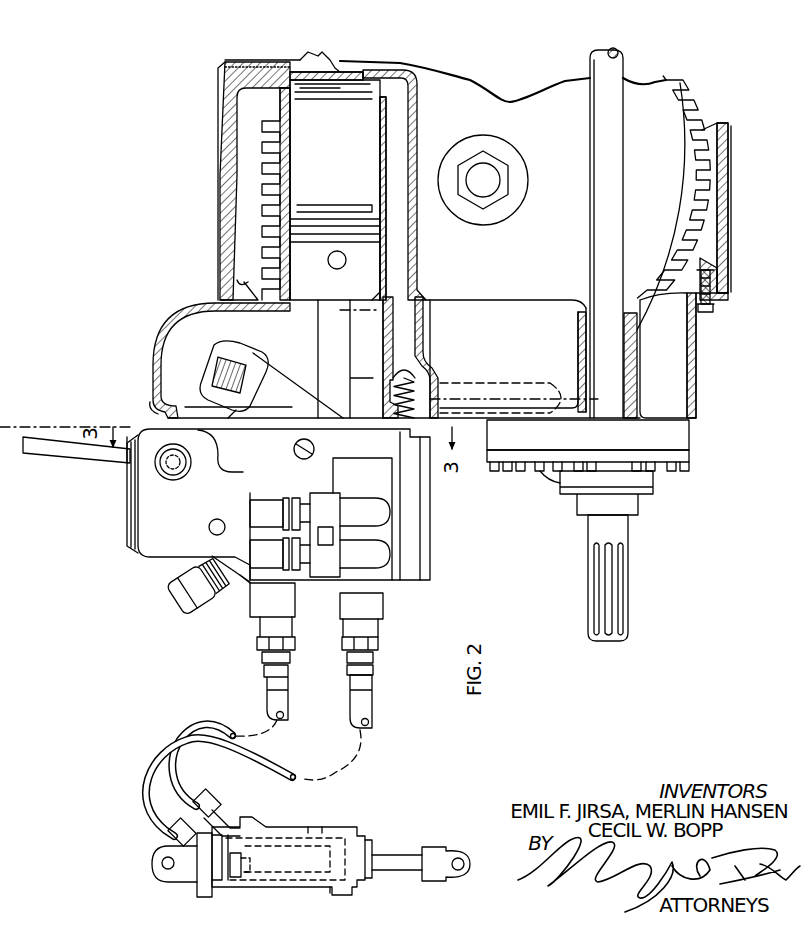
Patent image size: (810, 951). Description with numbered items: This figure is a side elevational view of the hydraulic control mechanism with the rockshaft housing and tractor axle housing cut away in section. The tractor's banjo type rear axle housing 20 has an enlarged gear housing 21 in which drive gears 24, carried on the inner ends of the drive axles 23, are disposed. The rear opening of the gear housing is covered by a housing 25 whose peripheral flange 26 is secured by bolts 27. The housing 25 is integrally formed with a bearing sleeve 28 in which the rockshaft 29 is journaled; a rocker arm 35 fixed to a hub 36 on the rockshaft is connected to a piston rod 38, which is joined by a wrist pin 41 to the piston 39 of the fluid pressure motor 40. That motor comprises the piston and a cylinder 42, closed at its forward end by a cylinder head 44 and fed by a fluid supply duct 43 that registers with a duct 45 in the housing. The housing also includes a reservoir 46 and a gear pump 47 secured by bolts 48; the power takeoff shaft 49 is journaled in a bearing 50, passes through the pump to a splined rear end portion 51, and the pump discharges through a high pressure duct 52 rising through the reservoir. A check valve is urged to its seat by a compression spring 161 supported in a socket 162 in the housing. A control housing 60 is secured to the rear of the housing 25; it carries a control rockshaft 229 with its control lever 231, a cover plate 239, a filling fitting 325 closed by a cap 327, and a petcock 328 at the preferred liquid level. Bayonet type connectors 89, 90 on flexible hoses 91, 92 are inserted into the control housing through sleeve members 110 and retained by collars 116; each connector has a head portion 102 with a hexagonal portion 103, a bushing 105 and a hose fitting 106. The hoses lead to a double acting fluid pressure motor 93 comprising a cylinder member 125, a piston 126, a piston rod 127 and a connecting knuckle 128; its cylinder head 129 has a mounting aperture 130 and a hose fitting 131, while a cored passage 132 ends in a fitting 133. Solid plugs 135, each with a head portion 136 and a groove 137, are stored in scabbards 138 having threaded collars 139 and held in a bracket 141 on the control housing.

The rear axle housing 20 is at (218, 108).
The gear housing 21 is at (219, 240).
The drive axle 23 is at (478, 192).
The drive gear 24 is at (258, 288).
The housing 25 is at (698, 382).
The flange 26 is at (729, 297).
The bolt 27 is at (711, 316).
The bearing sleeve 28 is at (159, 343).
The rockshaft 29 is at (213, 370).
The rocker arm 35 is at (289, 389).
The hub 36 is at (251, 354).
The piston rod 38 is at (340, 374).
The piston 39 is at (365, 259).
The fluid pressure motor 40 is at (340, 66).
The wrist pin 41 is at (328, 262).
The cylinder 42 is at (331, 147).
The fluid supply duct 43 is at (403, 140).
The cylinder head 44 is at (312, 76).
The duct 45 is at (405, 343).
The reservoir 46 is at (531, 332).
The gear pump 47 is at (692, 438).
The bolt 48 is at (520, 472).
The power takeoff shaft 49 is at (592, 270).
The bearing 50 is at (625, 346).
The splined rear end portion 51 is at (600, 612).
The high pressure duct 52 is at (478, 396).
The control housing 60 is at (161, 500).
The bayonet type connector 89 is at (253, 633).
The bayonet type connector 90 is at (341, 634).
The flexible hose 91 is at (271, 712).
The flexible hose 92 is at (373, 711).
The double acting fluid pressure motor 93 is at (289, 853).
The head portion 102 is at (370, 628).
The hexagonal portion 103 is at (380, 644).
The bushing 105 is at (375, 664).
The hose fitting 106 is at (350, 680).
The bayonet-receiving sleeve member 110 is at (384, 600).
The collar 116 is at (296, 608).
The cylinder member 125 is at (284, 826).
The piston 126 is at (236, 878).
The piston rod 127 is at (398, 856).
The connecting knuckle 128 is at (440, 848).
The cylinder head 129 is at (202, 893).
The aperture 130 is at (162, 864).
The hose fitting 131 is at (172, 838).
The cored passage 132 is at (314, 834).
The fitting 133 is at (215, 806).
The solid plug 135 is at (250, 545).
The head portion 136 is at (262, 504).
The groove 137 is at (285, 498).
The scabbard 138 is at (375, 548).
The collar 139 is at (320, 493).
The bracket 141 is at (350, 498).
The compression spring 161 is at (395, 404).
The socket 162 is at (388, 374).
The control rockshaft 229 is at (178, 482).
The control lever 231 is at (50, 444).
The cover plate 239 is at (130, 524).
The fitting 325 is at (246, 636).
The cap 327 is at (176, 592).
The petcock 328 is at (296, 447).